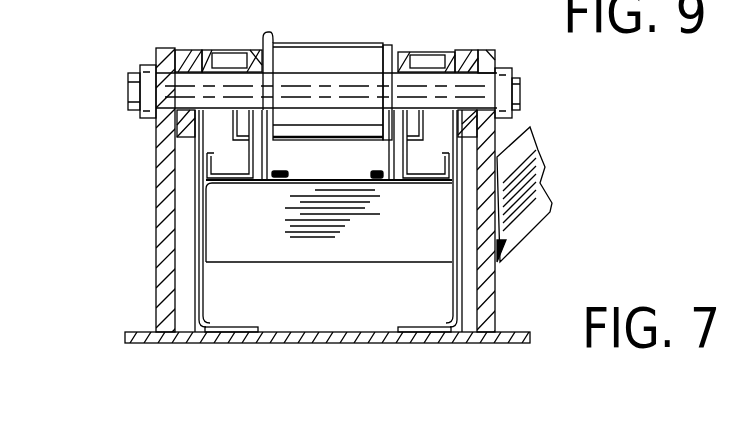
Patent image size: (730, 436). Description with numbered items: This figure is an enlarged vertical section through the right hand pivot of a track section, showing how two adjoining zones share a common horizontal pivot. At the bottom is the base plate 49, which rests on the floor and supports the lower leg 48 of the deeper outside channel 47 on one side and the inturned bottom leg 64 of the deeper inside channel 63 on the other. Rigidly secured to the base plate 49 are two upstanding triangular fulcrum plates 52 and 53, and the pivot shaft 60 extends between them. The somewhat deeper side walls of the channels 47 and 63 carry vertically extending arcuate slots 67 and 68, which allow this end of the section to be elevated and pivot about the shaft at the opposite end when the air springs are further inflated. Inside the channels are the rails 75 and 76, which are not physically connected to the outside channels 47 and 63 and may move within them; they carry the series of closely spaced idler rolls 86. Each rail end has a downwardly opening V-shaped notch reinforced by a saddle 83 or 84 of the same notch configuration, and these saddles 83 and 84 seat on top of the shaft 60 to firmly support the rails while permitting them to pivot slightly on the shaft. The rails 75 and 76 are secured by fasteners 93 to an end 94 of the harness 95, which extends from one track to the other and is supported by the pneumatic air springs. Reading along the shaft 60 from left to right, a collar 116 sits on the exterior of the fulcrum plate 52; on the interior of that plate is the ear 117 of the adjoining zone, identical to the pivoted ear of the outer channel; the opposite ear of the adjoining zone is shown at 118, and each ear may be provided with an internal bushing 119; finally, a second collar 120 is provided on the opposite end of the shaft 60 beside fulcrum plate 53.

The channel 47 is at (200, 318).
The lower leg 48 is at (226, 326).
The base plate 49 is at (320, 344).
The fulcrum plate 52 is at (157, 218).
The fulcrum plate 53 is at (497, 295).
The pivot shaft 60 is at (350, 87).
The channel 63 is at (455, 327).
The inturned bottom leg 64 is at (413, 327).
The arcuate slot 67 is at (157, 287).
The arcuate slot 68 is at (495, 238).
The rail 75 is at (232, 183).
The rail 76 is at (428, 183).
The saddle 83 is at (247, 51).
The saddle 84 is at (411, 53).
The idler roll 86 is at (305, 43).
The fastener 93 is at (366, 171).
The end of harness 94 is at (350, 253).
The harness 95 is at (538, 170).
The collar 116 is at (140, 66).
The ear 117 is at (185, 52).
The ear 118 is at (467, 56).
The internal bushing 119 is at (515, 88).
The collar 120 is at (480, 86).